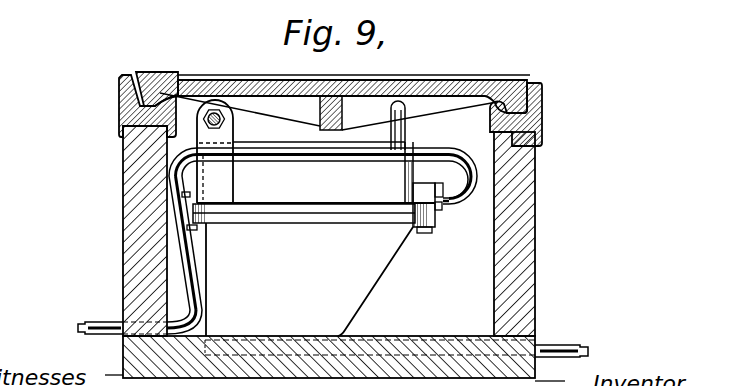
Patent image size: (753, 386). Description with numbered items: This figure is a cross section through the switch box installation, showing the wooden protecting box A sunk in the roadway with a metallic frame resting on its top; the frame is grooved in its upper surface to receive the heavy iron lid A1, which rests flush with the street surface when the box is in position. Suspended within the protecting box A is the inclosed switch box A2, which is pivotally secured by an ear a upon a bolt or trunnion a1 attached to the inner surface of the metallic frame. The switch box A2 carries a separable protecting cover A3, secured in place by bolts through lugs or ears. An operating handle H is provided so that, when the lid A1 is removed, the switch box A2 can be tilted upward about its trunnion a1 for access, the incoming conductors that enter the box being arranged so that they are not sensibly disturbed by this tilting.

The protecting box A is at (123, 205).
The iron lid A1 is at (212, 73).
The switch box A2 is at (312, 187).
The protecting cover A3 is at (309, 279).
The ear a is at (231, 124).
The bolt or trunnion a1 is at (250, 110).
The operating handle H is at (408, 128).